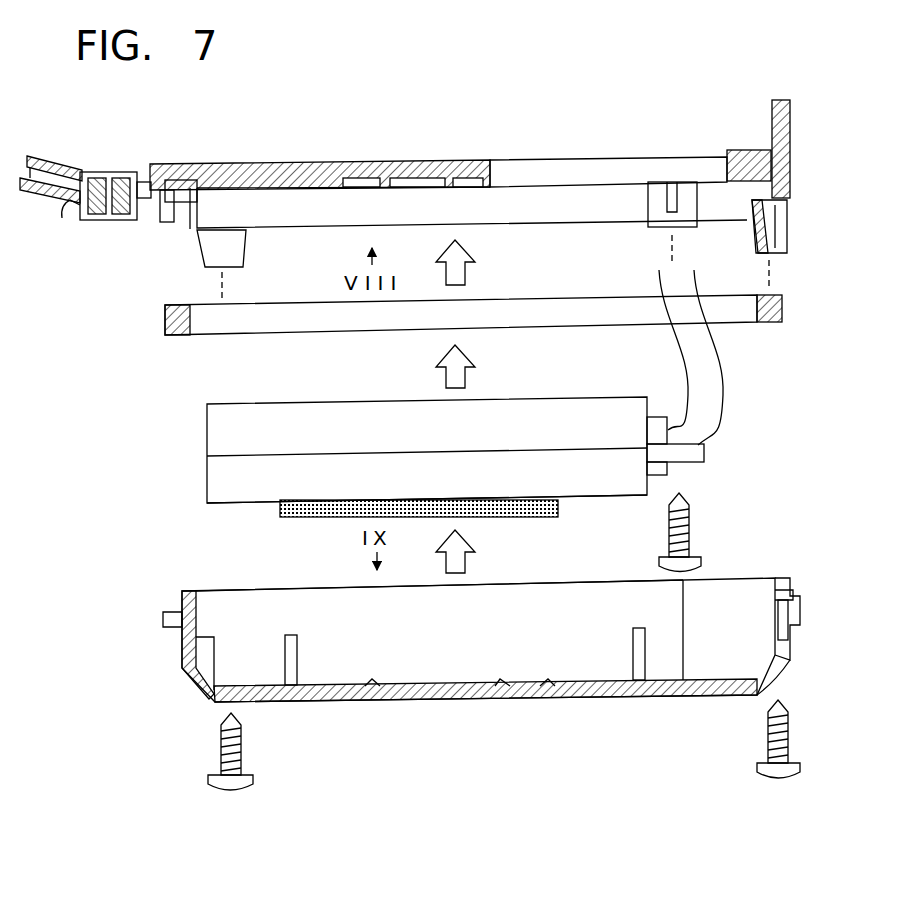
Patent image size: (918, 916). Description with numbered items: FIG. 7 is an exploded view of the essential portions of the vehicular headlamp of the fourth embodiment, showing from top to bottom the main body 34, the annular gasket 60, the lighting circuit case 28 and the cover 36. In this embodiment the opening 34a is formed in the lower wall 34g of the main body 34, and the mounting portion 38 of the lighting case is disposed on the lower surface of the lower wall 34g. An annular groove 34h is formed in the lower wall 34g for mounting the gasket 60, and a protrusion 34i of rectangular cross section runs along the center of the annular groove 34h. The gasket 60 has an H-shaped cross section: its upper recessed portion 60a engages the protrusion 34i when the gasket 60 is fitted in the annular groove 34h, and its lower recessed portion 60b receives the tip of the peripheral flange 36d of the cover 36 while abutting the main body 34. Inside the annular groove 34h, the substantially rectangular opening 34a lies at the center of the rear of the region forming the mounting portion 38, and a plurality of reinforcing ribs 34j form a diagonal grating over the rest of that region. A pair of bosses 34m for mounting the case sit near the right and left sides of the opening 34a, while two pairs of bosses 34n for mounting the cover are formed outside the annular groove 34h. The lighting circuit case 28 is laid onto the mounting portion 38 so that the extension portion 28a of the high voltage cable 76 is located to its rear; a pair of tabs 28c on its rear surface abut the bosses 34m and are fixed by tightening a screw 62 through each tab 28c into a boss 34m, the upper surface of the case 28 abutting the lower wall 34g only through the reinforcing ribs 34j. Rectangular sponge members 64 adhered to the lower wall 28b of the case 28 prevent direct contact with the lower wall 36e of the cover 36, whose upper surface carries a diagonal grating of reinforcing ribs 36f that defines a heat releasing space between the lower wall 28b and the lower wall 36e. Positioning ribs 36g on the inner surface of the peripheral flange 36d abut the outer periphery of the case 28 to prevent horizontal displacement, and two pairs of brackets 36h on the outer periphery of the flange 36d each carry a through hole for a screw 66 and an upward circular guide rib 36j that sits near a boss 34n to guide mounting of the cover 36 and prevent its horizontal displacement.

The main body 34 is at (150, 162).
The opening 34a is at (553, 173).
The lower wall 34g is at (318, 168).
The annular groove 34h is at (172, 208).
The protrusion 34i is at (198, 205).
The reinforcing ribs 34j is at (470, 188).
The bosses for mounting the case 34m is at (658, 218).
The bosses for mounting the cover 34n is at (226, 258).
The mounting portion of the lighting case 38 is at (502, 208).
The annular gasket 60 is at (430, 330).
The upper recessed portion 60a is at (178, 305).
The lower recessed portion 60b is at (178, 335).
The lighting circuit case 28 is at (435, 457).
The extension portion 28a is at (657, 424).
The lower wall 28b is at (597, 500).
The tabs 28c is at (690, 459).
The high voltage cable 76 is at (712, 385).
The sponge member 64 is at (335, 518).
The screw 62 is at (702, 560).
The cover 36 is at (178, 657).
The peripheral flange 36d is at (180, 602).
The lower wall 36e is at (445, 702).
The reinforcing ribs 36f is at (378, 688).
The positioning ribs 36g is at (288, 664).
The brackets 36h is at (790, 661).
The guide rib 36j is at (805, 598).
The screw 66 is at (253, 781).